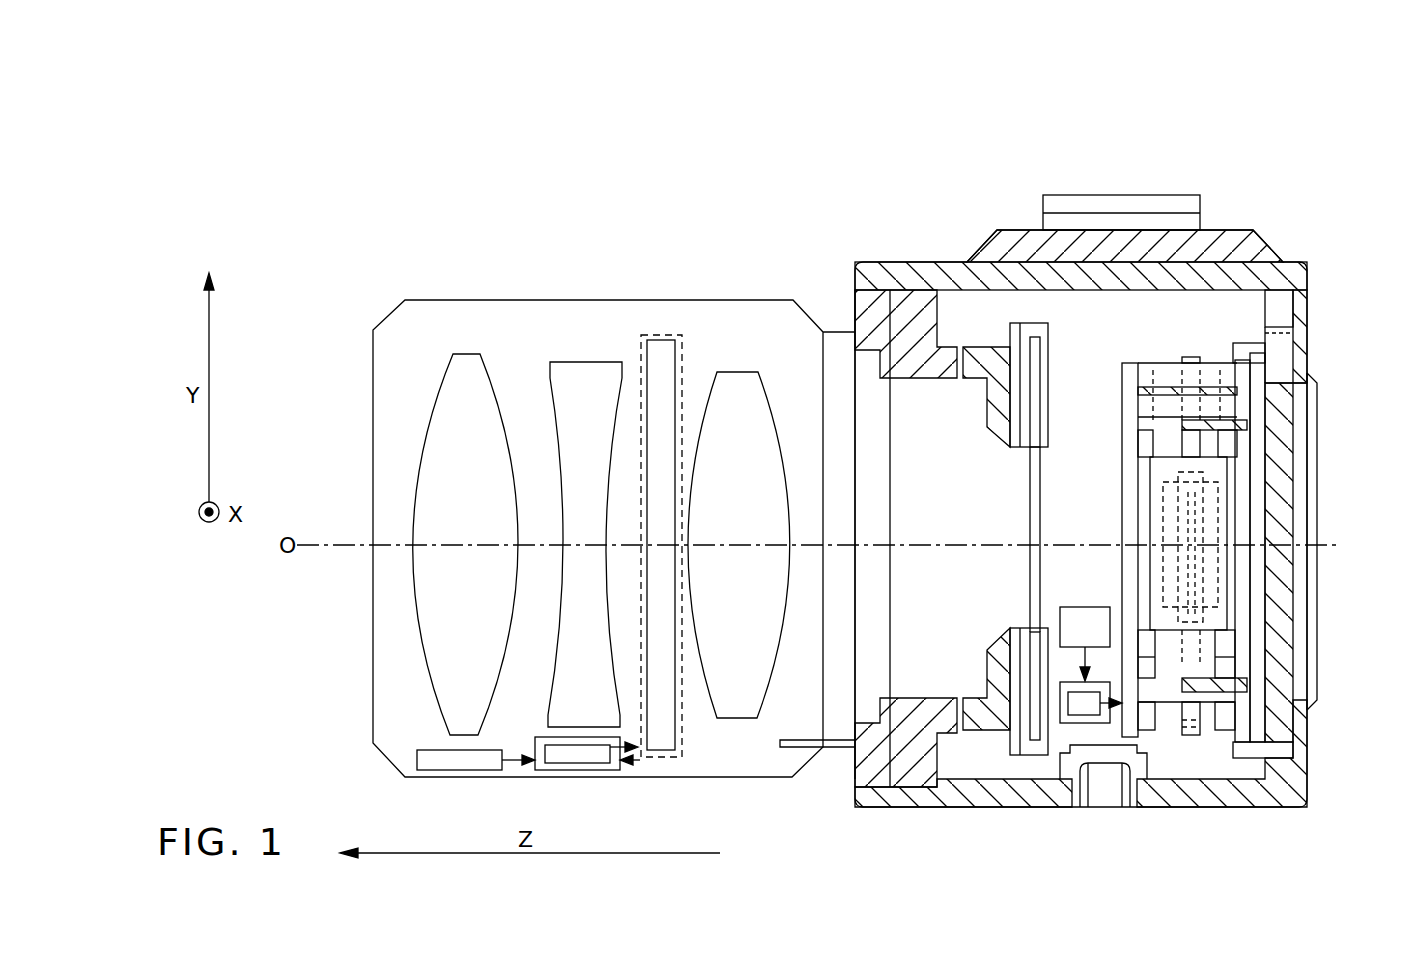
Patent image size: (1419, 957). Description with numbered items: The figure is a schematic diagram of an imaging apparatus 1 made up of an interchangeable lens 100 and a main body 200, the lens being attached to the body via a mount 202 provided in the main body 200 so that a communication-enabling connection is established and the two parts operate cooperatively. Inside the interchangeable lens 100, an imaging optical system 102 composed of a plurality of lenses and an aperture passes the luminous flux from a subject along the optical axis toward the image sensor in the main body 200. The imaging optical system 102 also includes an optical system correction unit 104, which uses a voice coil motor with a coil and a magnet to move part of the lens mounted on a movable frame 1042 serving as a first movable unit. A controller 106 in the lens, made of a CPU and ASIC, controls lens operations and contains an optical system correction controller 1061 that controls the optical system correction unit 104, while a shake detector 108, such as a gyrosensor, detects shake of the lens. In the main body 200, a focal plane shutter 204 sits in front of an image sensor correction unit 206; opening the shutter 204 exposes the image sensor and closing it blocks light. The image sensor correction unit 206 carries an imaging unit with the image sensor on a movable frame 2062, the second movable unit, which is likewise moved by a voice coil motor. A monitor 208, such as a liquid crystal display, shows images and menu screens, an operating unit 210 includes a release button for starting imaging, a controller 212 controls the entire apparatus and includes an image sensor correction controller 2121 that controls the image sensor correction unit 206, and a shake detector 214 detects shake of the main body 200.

The imaging apparatus 1 is at (1301, 114).
The interchangeable lens 100 is at (596, 288).
The imaging optical system 102 is at (462, 334).
The optical system correction unit 104 is at (649, 335).
The movable frame 1042 is at (677, 335).
The controller 106 is at (553, 772).
The optical system correction controller 1061 is at (600, 765).
The shake detector 108 is at (460, 773).
The main body 200 is at (921, 253).
The mount 202 is at (854, 776).
The shutter 204 is at (1030, 508).
The image sensor correction unit 206 is at (1202, 350).
The movable frame 2062 is at (1222, 450).
The monitor 208 is at (1296, 508).
The operating unit 210 is at (1155, 194).
The controller 212 is at (1100, 724).
The image sensor correction controller 2121 is at (1092, 716).
The shake detector 214 is at (1096, 606).